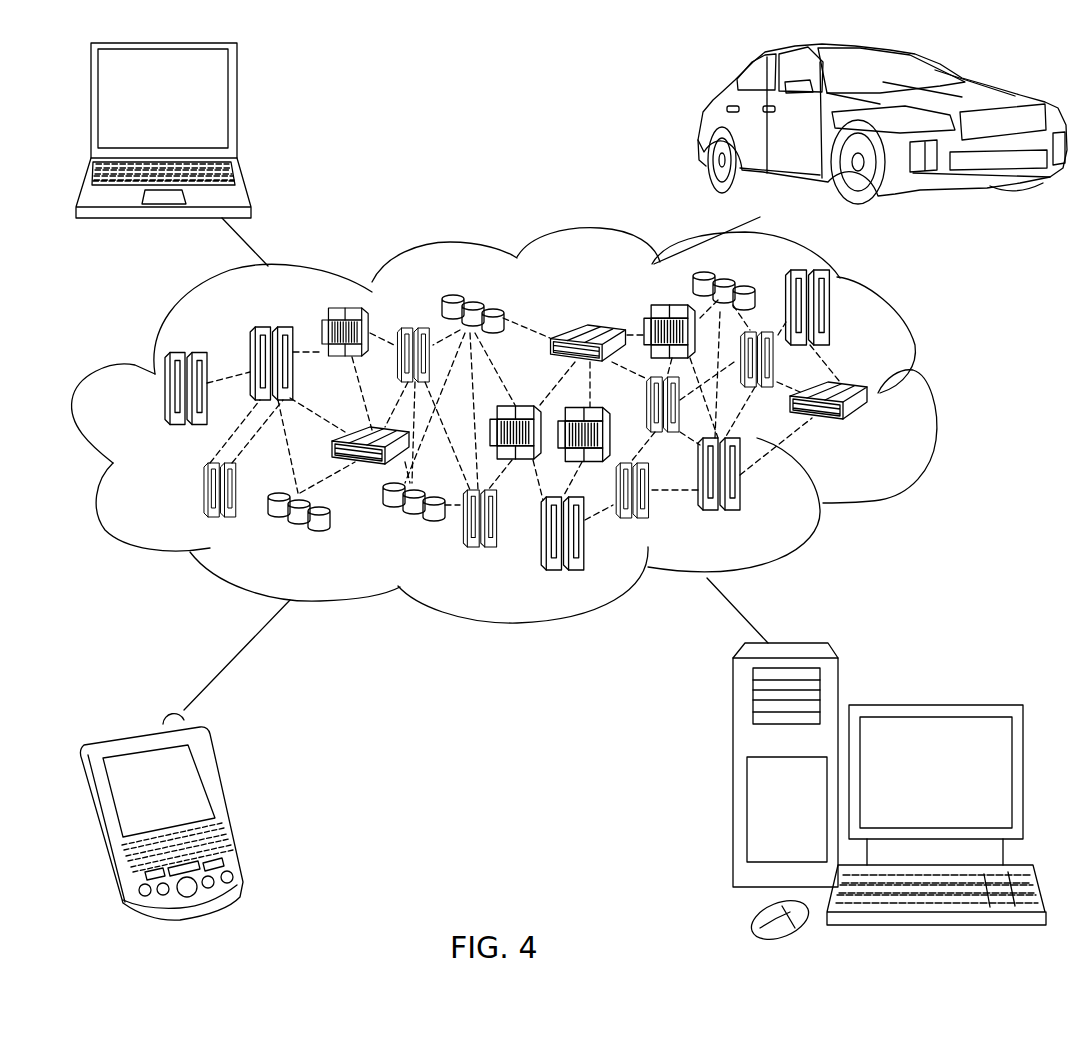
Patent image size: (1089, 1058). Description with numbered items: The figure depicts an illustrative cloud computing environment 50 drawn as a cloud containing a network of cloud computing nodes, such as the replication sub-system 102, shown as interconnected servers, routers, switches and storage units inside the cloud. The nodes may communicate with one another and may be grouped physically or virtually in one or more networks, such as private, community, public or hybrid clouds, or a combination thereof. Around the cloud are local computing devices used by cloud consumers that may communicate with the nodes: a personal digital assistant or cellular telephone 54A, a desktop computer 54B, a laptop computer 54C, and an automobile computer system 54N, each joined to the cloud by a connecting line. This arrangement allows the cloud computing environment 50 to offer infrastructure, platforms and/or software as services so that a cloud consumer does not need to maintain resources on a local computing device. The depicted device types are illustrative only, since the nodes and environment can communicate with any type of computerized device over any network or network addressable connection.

The cloud computing environment 50 is at (937, 397).
The replication sub-system 102 is at (872, 430).
The personal digital assistant (PDA) or cellular telephone 54A is at (227, 803).
The desktop computer 54B is at (933, 705).
The laptop computer 54C is at (237, 108).
The automobile computer system 54N is at (700, 123).